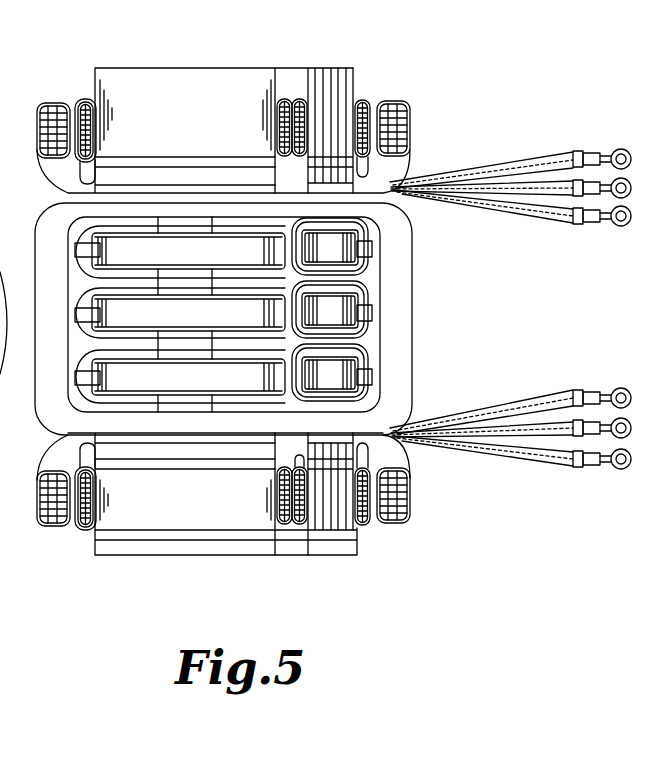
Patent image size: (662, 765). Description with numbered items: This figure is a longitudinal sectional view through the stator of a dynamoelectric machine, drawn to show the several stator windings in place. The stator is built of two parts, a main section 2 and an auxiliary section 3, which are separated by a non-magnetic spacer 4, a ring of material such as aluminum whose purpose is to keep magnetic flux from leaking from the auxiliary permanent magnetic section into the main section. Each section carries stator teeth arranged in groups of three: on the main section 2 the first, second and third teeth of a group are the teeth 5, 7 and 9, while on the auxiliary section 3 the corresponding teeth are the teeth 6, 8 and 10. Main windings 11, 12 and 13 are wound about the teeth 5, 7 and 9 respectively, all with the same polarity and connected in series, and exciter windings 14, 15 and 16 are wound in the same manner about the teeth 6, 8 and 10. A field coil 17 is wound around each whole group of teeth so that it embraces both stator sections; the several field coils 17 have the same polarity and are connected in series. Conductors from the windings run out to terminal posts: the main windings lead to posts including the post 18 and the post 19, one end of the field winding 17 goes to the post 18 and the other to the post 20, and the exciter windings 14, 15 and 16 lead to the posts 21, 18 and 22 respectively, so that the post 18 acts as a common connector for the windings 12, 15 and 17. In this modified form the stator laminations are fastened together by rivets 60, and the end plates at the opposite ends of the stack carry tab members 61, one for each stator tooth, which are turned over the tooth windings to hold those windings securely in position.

The main stator section 2 is at (188, 122).
The auxiliary stator section 3 is at (337, 70).
The non-magnetic spacer 4 is at (297, 70).
The first tooth of main section 5 is at (177, 388).
The first tooth of auxiliary section 6 is at (324, 383).
The second tooth of main section 7 is at (177, 324).
The second tooth of auxiliary section 8 is at (324, 319).
The third tooth of main section 9 is at (177, 260).
The third tooth of auxiliary section 10 is at (322, 256).
The main winding 11 is at (113, 403).
The main winding 12 is at (87, 110).
The main winding 13 is at (128, 223).
The exciter winding 14 is at (362, 351).
The exciter winding 15 is at (362, 100).
The exciter winding 16 is at (332, 222).
The field coil 17 is at (43, 128).
The post 18 is at (627, 388).
The post 19 is at (627, 470).
The post 20 is at (618, 228).
The post 21 is at (626, 147).
The post 22 is at (630, 197).
The rivets 60 is at (378, 562).
The tab members 61 is at (77, 160).